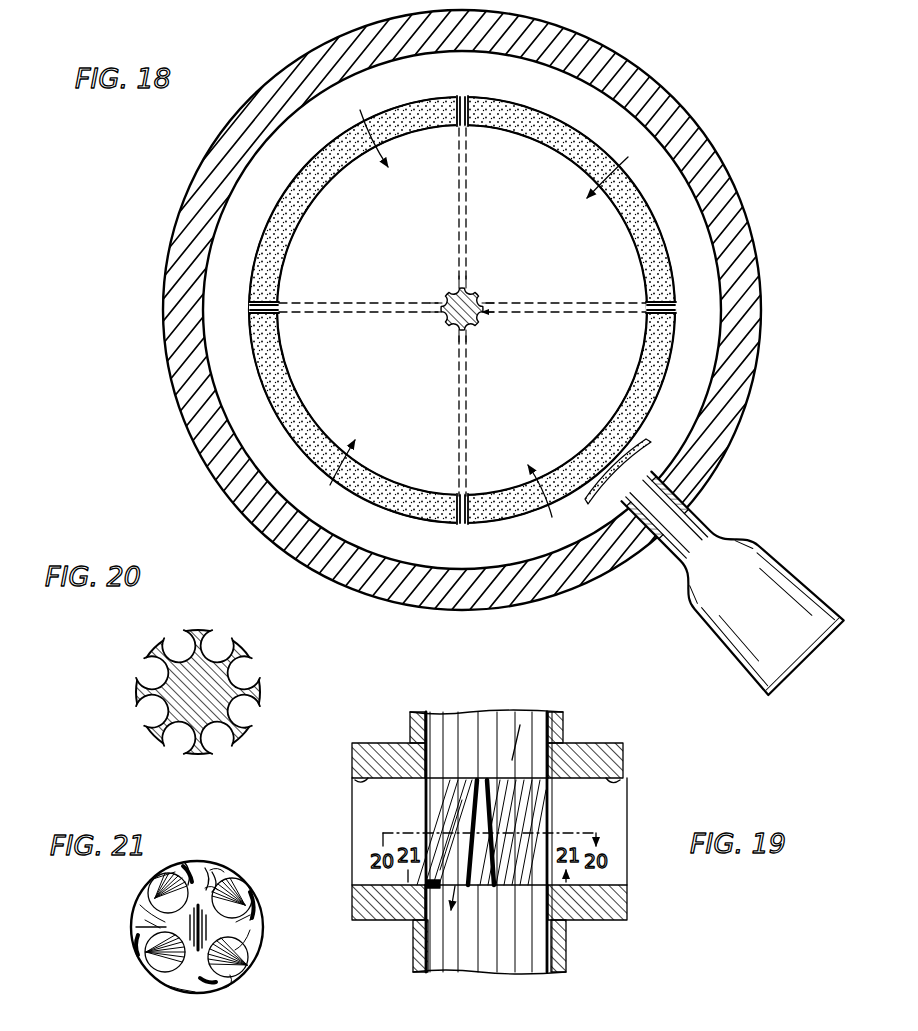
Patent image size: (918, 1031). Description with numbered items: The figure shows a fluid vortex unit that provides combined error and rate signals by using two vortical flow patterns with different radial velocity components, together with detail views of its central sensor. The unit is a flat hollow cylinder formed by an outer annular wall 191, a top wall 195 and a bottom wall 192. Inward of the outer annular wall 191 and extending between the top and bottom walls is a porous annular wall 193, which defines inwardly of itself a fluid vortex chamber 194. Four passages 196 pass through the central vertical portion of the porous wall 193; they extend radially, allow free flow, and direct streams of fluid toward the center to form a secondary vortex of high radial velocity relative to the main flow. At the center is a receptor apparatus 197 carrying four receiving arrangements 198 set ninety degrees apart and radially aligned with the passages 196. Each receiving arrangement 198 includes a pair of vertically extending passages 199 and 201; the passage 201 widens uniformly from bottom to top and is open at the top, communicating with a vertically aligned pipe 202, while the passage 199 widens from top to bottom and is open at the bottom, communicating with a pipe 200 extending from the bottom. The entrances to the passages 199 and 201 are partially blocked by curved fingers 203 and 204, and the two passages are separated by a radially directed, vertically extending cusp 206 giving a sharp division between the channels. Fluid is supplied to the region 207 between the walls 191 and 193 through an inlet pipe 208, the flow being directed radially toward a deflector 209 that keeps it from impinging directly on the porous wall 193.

In FIG. 18, the outer annular wall 191 is at (744, 249).
In FIG. 18, the bottom wall 192 is at (480, 300).
In FIG. 19, the bottom wall 192 is at (615, 898).
In FIG. 18, the porous annular wall 193 is at (628, 212).
In FIG. 18, the fluid vortex chamber 194 is at (518, 140).
In FIG. 19, the fluid vortex chamber 194 is at (516, 831).
In FIG. 19, the top wall 195 is at (365, 781).
In FIG. 18, the passages 196 is at (461, 128).
In FIG. 18, the receptor apparatus 197 is at (483, 301).
In FIG. 20, the receptor apparatus 197 is at (226, 690).
In FIG. 21, the receptor apparatus 197 is at (193, 906).
In FIG. 19, the receptor apparatus 197 is at (540, 801).
In FIG. 18, the receiving arrangements 198 is at (468, 291).
In FIG. 20, the receiving arrangements 198 is at (250, 635).
In FIG. 18, the passage 199 is at (472, 331).
In FIG. 20, the passage 199 is at (172, 640).
In FIG. 21, the passage 199 is at (160, 901).
In FIG. 19, the passage 199 is at (470, 790).
In FIG. 19, the pipe 200 is at (414, 962).
In FIG. 18, the passage 201 is at (447, 298).
In FIG. 20, the passage 201 is at (230, 645).
In FIG. 21, the passage 201 is at (225, 960).
In FIG. 19, the passage 201 is at (489, 818).
In FIG. 19, the pipe 202 is at (565, 721).
In FIG. 20, the curved finger 203 is at (183, 640).
In FIG. 21, the curved finger 203 is at (187, 862).
In FIG. 20, the curved finger 204 is at (213, 640).
In FIG. 20, the cusp 206 is at (200, 650).
In FIG. 21, the cusp 206 is at (205, 866).
In FIG. 18, the region 207 is at (703, 355).
In FIG. 18, the inlet pipe 208 is at (700, 520).
In FIG. 18, the deflector 209 is at (648, 442).